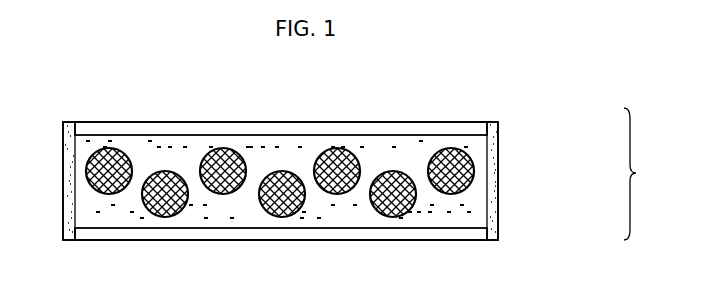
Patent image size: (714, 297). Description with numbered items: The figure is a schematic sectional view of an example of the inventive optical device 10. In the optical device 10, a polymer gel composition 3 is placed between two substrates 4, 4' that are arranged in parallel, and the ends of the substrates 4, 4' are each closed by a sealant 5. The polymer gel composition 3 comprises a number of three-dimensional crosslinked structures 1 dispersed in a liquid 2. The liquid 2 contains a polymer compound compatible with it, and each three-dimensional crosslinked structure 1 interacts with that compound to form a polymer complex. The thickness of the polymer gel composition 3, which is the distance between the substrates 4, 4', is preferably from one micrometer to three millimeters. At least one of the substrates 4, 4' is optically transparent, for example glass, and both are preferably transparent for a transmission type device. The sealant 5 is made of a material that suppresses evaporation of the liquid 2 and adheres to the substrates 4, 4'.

The three-dimensional crosslinked structure 1 is at (462, 160).
The liquid 2 is at (475, 215).
The polymer gel composition 3 is at (642, 174).
The substrate 4 is at (281, 106).
The substrate 4' is at (281, 259).
The sealant 5 is at (63, 132).
The optical device 10 is at (492, 107).